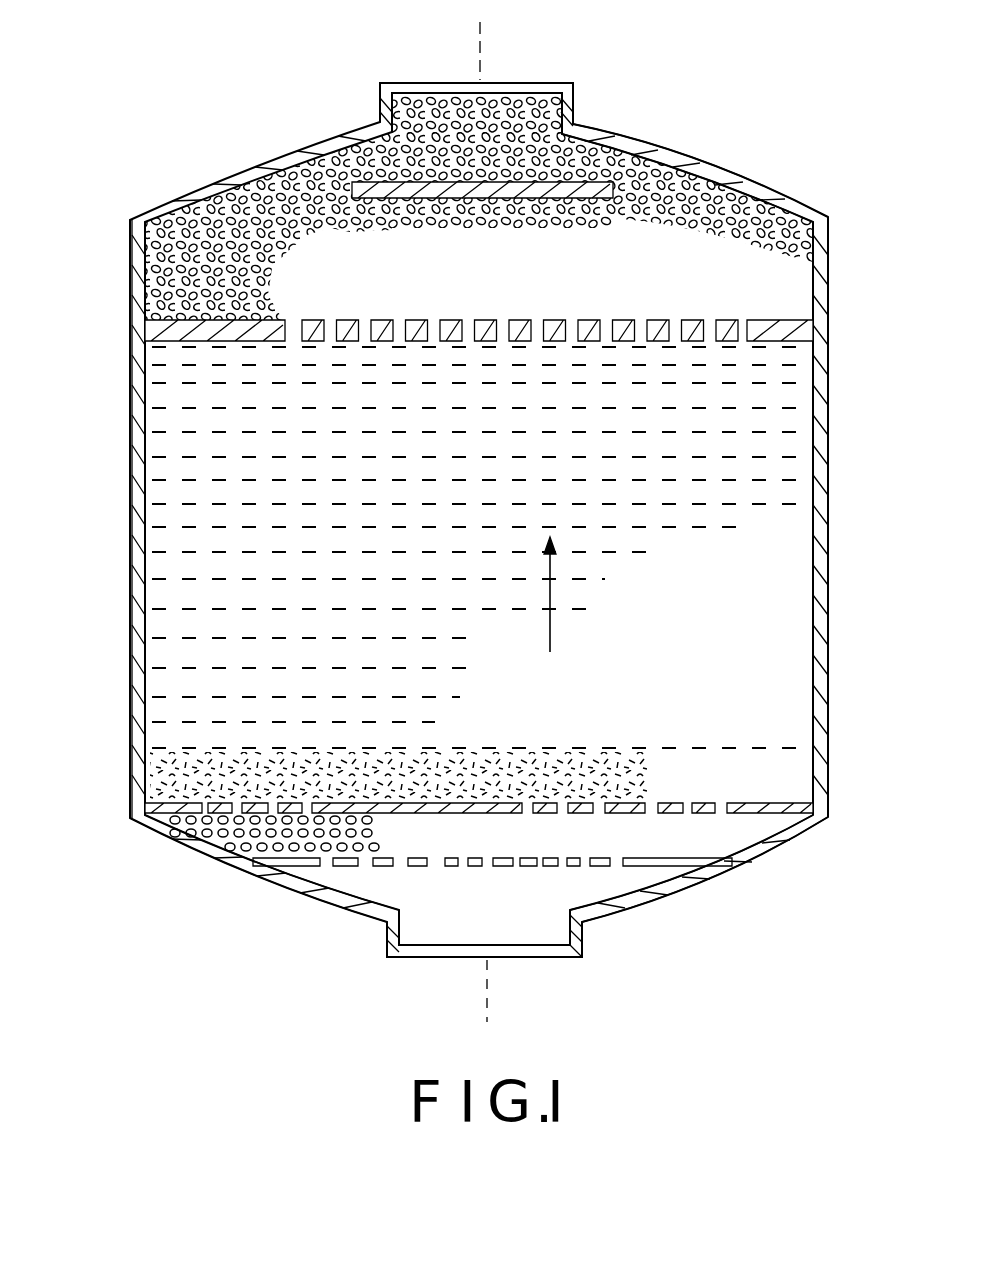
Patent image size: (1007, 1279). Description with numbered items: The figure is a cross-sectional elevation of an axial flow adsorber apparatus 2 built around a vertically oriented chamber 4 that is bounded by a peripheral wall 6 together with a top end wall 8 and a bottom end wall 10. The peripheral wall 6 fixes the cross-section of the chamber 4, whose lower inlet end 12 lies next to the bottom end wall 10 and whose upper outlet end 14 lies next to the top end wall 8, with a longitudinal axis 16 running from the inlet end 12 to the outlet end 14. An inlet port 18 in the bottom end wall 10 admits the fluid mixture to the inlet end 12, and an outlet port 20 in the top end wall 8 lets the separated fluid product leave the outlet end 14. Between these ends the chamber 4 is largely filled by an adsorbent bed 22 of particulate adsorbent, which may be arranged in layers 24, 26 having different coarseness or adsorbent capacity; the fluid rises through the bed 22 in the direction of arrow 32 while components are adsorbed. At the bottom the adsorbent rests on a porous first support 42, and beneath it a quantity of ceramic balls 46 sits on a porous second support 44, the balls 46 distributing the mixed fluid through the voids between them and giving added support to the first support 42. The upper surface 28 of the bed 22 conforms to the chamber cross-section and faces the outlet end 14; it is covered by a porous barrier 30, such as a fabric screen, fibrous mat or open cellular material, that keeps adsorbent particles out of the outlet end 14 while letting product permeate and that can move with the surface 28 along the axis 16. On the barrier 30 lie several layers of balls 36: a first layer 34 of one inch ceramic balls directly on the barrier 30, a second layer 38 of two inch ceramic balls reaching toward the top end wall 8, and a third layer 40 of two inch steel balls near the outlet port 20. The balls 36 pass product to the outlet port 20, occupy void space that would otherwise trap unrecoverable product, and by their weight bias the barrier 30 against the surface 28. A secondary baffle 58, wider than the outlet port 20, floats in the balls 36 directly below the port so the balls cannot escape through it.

The axial flow adsorber apparatus 2 is at (834, 384).
The chamber 4 is at (795, 605).
The peripheral wall 6 is at (822, 695).
The top end wall 8 is at (740, 180).
The bottom end wall 10 is at (780, 845).
The inlet end 12 is at (620, 883).
The outlet end 14 is at (672, 170).
The longitudinal axis 16 is at (494, 991).
The inlet port 18 is at (430, 930).
The outlet port 20 is at (497, 105).
The adsorbent bed 22 is at (185, 560).
The layer 24 is at (153, 780).
The layer 26 is at (157, 443).
The upper surface 28 is at (200, 348).
The porous barrier 30 is at (797, 327).
The arrow 32 is at (550, 626).
The first layer 34 is at (146, 299).
The balls 36 is at (225, 203).
The second layer 38 is at (323, 162).
The third layer 40 is at (448, 105).
The first support 42 is at (808, 820).
The second support 44 is at (305, 865).
The ceramic balls 46 is at (205, 828).
The secondary baffle 58 is at (575, 190).